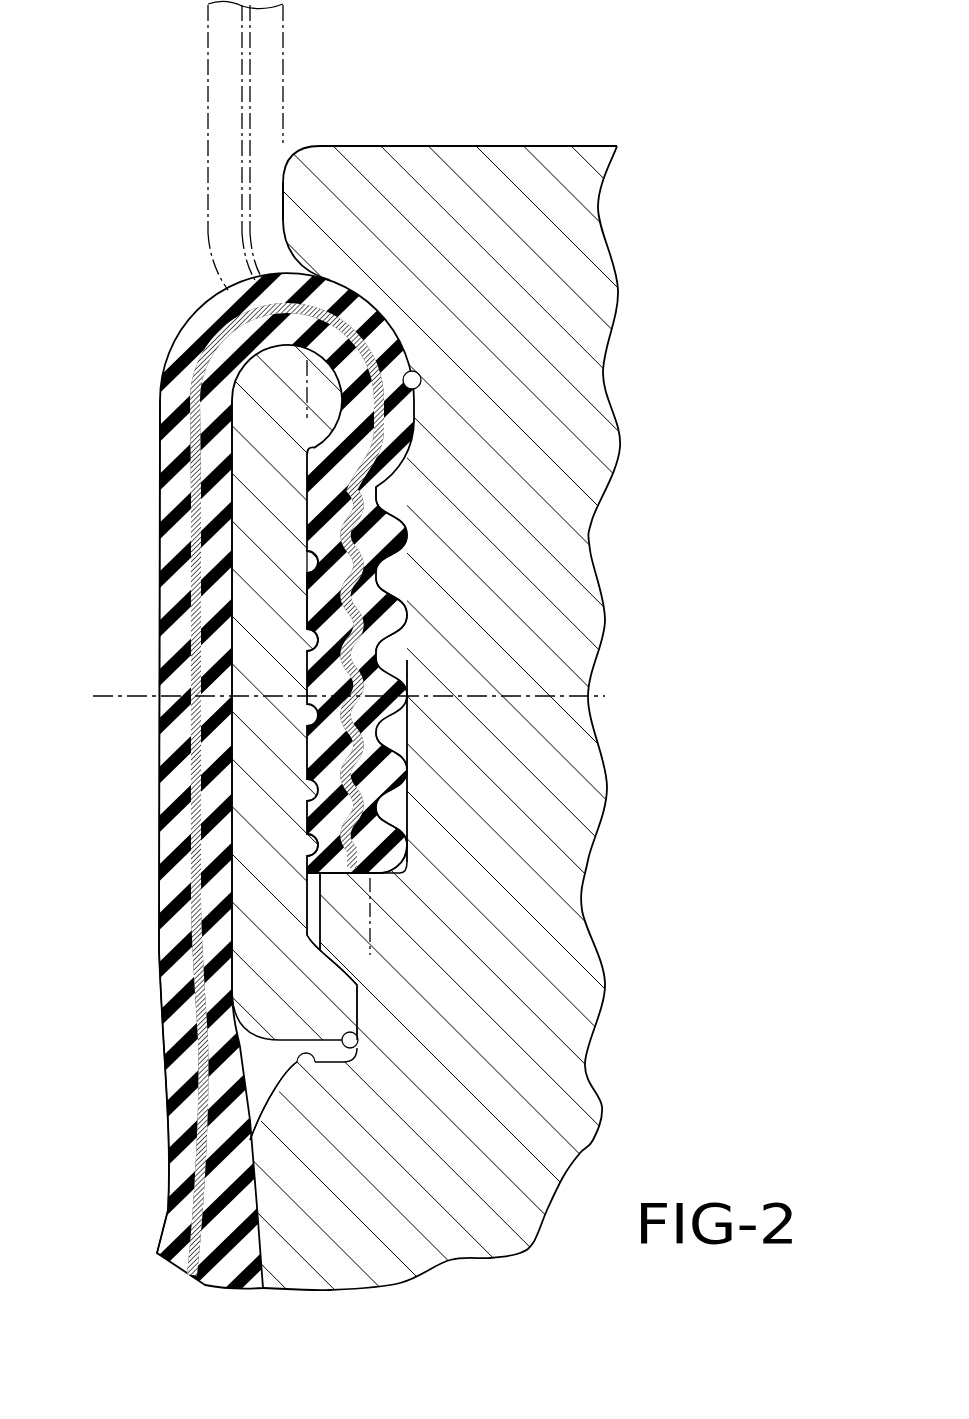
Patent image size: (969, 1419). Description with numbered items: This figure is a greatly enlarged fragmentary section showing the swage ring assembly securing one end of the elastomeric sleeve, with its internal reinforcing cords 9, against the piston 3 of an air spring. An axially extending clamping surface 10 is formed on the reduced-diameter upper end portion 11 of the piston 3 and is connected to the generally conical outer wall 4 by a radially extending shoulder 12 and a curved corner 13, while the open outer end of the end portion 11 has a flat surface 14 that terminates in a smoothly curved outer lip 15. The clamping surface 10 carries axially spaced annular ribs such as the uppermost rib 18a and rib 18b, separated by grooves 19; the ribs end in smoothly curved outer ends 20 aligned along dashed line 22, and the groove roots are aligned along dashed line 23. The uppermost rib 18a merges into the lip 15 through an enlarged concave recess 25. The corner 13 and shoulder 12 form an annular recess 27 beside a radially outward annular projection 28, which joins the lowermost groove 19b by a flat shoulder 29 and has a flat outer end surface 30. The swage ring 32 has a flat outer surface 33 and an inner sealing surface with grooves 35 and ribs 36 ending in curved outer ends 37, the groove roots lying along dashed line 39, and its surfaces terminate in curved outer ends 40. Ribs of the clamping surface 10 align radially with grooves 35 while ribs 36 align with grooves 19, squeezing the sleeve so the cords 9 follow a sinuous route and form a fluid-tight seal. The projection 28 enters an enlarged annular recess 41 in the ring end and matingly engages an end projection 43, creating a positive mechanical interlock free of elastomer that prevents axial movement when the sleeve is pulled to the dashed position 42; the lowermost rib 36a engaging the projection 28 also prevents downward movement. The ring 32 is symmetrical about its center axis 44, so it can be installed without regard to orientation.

The piston 3 is at (632, 299).
The conical outer wall 4 is at (238, 1222).
The reinforcing cords 9 is at (200, 490).
The clamping surface 10 is at (300, 342).
The upper end portion 11 is at (568, 1114).
The shoulder 12 is at (258, 1092).
The curved corner 13 is at (298, 1060).
The flat surface 14 is at (458, 146).
The outer lip 15 is at (283, 205).
The uppermost rib 18a is at (380, 492).
The rib 18b is at (380, 822).
The grooves 19 is at (410, 620).
The lowermost groove 19b is at (405, 842).
The outer ends 20 is at (318, 618).
The dashed line 22 is at (372, 930).
The dashed line 23 is at (408, 728).
The concave recess 25 is at (421, 382).
The annular recess 27 is at (362, 1053).
The annular projection 28 is at (325, 921).
The flat shoulder 29 is at (383, 875).
The outer end surface 30 is at (330, 888).
The swage ring 32 is at (222, 762).
The outer surface 33 is at (300, 644).
The grooves 35 is at (316, 556).
The ribs 36 is at (312, 532).
The lowermost rib 36a is at (330, 862).
The outer ends 37 is at (405, 530).
The dashed line 39 is at (305, 396).
The outer ends 40 is at (257, 356).
The annular recess 41 is at (325, 962).
The dashed position 42 is at (208, 68).
The end projection 43 is at (332, 1000).
The center axis 44 is at (93, 696).